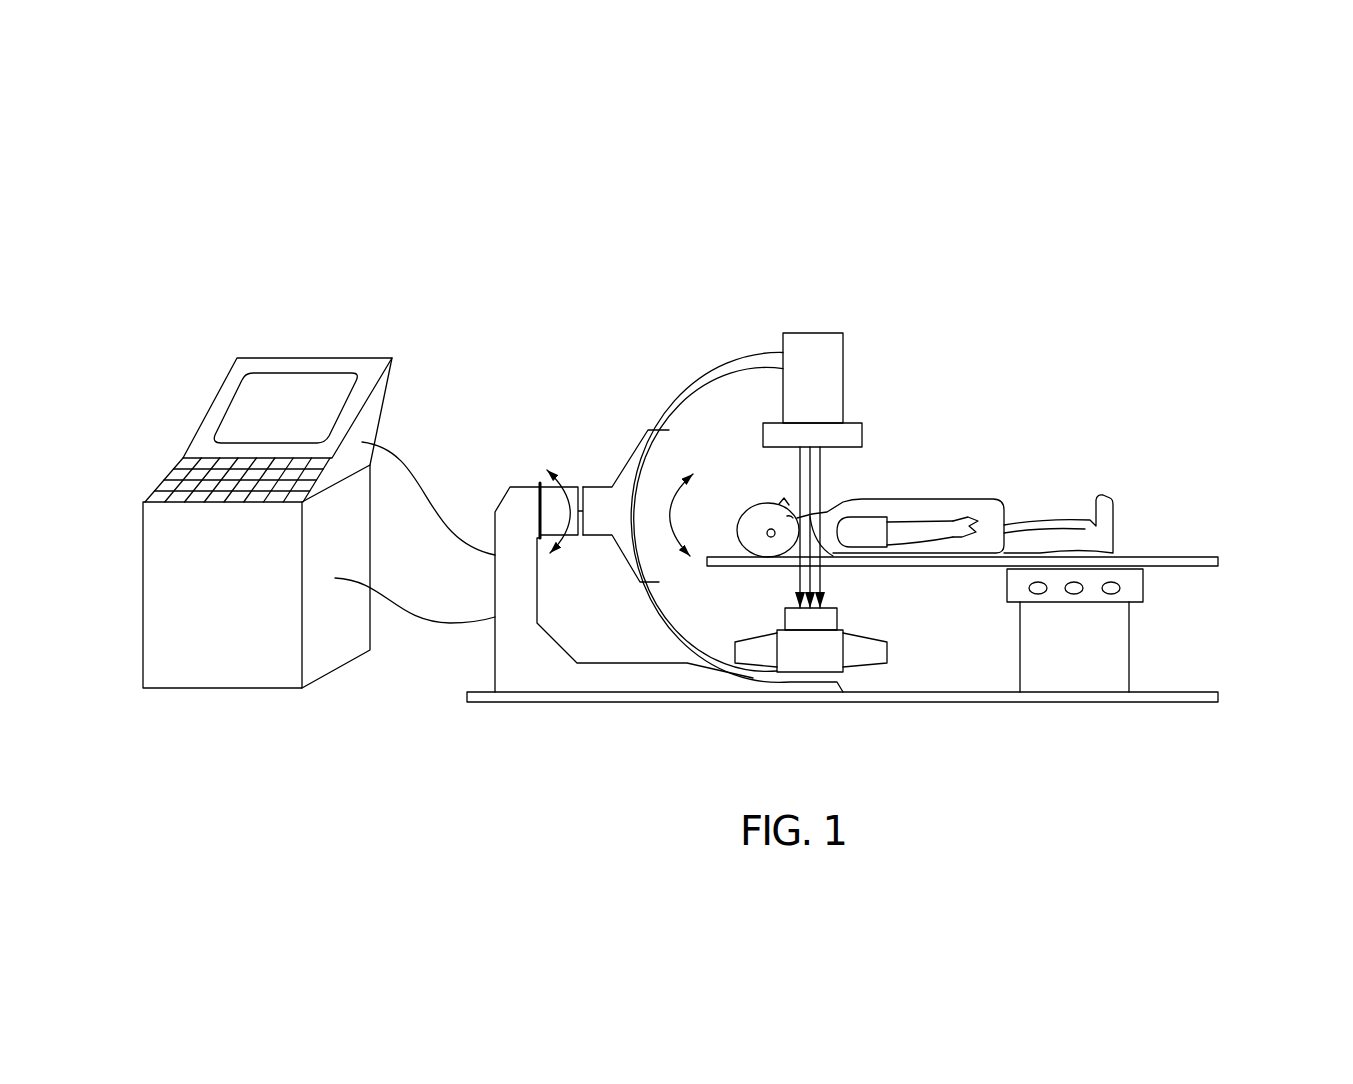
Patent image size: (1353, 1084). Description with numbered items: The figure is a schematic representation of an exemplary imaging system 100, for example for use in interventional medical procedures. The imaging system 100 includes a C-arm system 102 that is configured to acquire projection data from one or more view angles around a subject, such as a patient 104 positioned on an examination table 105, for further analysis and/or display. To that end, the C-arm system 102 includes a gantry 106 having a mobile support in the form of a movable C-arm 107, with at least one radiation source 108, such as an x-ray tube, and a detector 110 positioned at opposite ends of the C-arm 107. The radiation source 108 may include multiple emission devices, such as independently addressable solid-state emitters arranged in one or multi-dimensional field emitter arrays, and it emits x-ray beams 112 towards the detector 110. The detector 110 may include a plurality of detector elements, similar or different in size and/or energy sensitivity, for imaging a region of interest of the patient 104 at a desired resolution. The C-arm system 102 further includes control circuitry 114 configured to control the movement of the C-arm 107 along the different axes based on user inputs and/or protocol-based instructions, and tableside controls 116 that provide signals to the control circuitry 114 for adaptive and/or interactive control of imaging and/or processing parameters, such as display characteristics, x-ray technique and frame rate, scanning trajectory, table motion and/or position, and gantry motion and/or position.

The imaging system 100 is at (1178, 232).
The C-arm system 102 is at (893, 310).
The patient 104 is at (1110, 502).
The examination table 105 is at (1218, 557).
The gantry 106 is at (551, 468).
The C-arm 107 is at (710, 373).
The radiation source 108 is at (845, 375).
The detector 110 is at (838, 633).
The x-ray beams 112 is at (822, 482).
The control circuitry 114 is at (347, 358).
The tableside controls 116 is at (1143, 587).